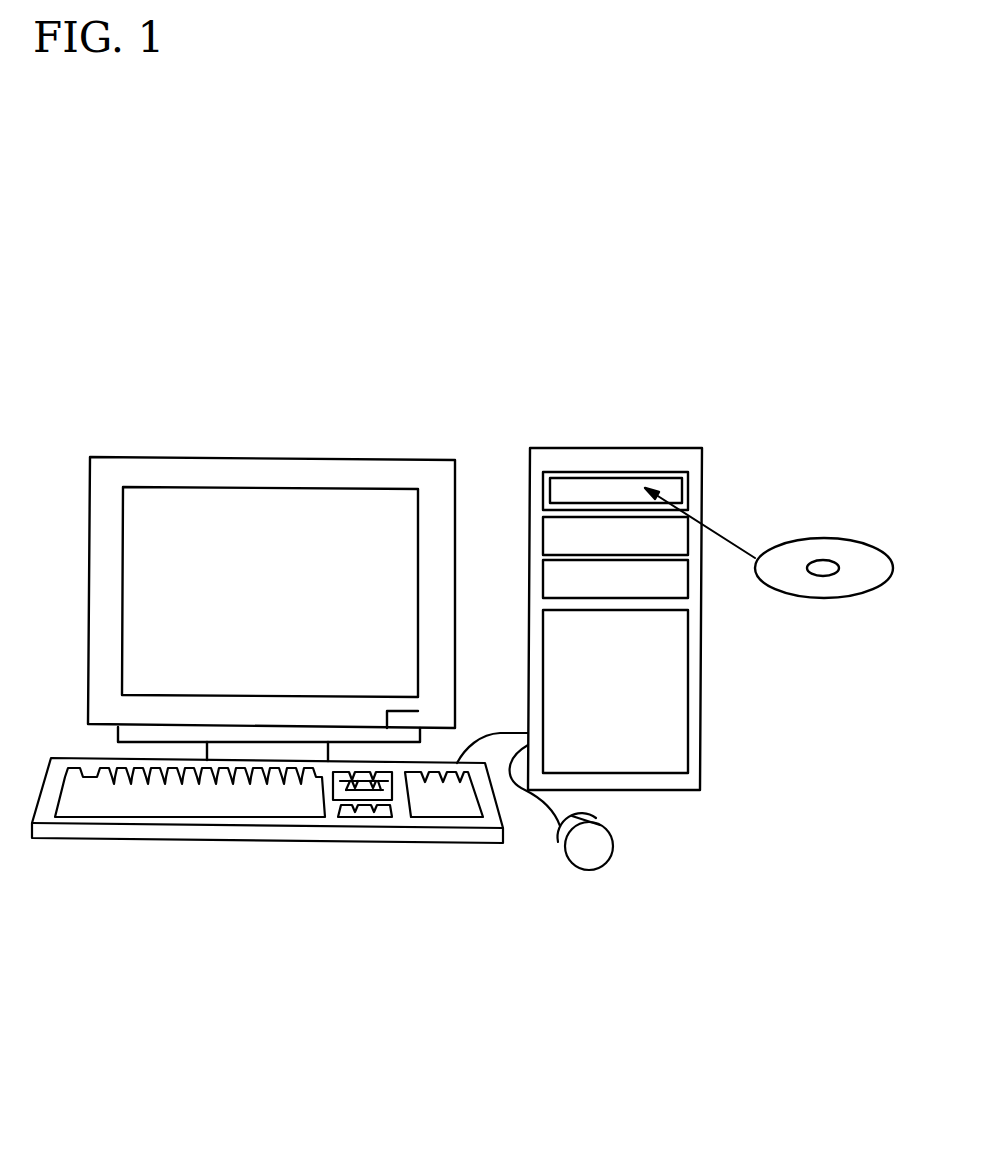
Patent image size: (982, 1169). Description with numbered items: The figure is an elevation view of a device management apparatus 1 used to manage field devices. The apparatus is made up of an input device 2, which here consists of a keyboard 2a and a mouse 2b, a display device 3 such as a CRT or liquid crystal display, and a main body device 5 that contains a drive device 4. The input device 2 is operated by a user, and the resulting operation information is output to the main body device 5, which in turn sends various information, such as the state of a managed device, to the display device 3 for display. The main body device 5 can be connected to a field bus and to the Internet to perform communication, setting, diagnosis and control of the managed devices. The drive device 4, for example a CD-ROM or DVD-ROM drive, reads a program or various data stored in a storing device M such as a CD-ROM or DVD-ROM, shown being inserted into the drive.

The device management apparatus 1 is at (569, 310).
The input device 2 is at (612, 947).
The keyboard 2a is at (482, 843).
The mouse 2b is at (593, 870).
The display device 3 is at (315, 477).
The drive device 4 is at (645, 478).
The main body device 5 is at (700, 685).
The storing device M is at (835, 537).